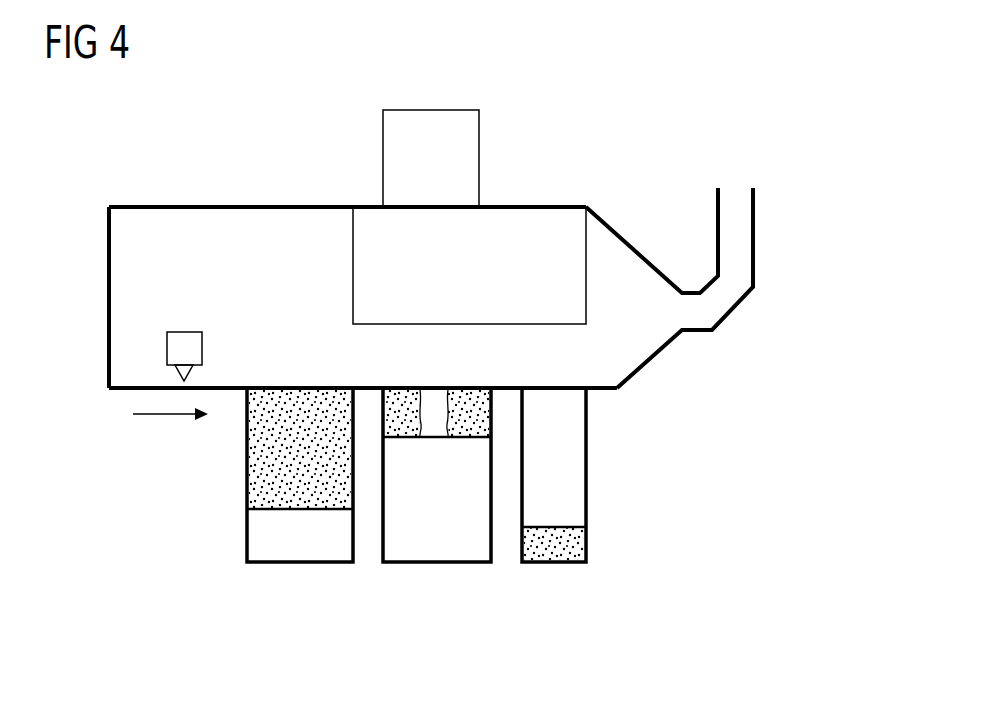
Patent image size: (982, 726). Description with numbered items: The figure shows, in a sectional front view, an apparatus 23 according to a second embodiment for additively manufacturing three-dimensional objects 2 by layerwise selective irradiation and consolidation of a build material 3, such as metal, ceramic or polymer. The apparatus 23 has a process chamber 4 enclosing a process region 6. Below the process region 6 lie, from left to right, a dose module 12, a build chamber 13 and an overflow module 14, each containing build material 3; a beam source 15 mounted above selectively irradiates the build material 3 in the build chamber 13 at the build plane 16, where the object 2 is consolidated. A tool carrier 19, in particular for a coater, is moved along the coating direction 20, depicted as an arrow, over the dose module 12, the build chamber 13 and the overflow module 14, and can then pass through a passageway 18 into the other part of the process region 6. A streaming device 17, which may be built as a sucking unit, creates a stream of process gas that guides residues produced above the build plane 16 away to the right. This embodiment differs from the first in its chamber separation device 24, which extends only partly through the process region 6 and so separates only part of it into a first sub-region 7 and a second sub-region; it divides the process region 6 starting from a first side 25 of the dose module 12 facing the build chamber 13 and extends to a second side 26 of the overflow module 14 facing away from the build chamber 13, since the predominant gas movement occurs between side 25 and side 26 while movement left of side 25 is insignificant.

The three-dimensional object 2 is at (433, 427).
The build material 3 is at (258, 487).
The process chamber 4 is at (315, 205).
The process region 6 is at (135, 273).
The first sub-region 7 is at (501, 288).
The dose module 12 is at (296, 588).
The build chamber 13 is at (441, 588).
The overflow module 14 is at (554, 588).
The beam source 15 is at (432, 110).
The build plane 16 is at (470, 388).
The streaming device 17 is at (643, 196).
The passageway 18 is at (558, 352).
The tool carrier 19 is at (167, 344).
The coating direction 20 is at (153, 418).
The apparatus 23 is at (258, 102).
The chamber separation device 24 is at (547, 225).
The first side 25 is at (357, 395).
The second side 26 is at (590, 400).